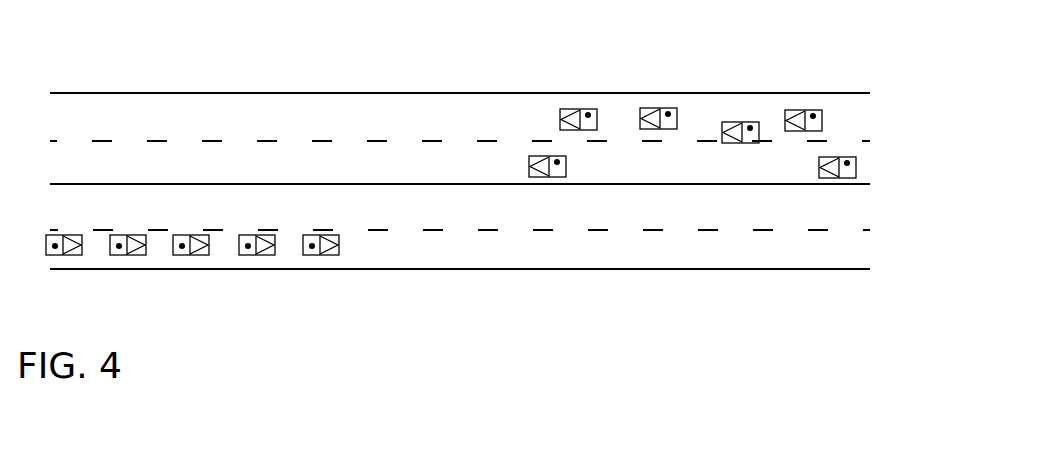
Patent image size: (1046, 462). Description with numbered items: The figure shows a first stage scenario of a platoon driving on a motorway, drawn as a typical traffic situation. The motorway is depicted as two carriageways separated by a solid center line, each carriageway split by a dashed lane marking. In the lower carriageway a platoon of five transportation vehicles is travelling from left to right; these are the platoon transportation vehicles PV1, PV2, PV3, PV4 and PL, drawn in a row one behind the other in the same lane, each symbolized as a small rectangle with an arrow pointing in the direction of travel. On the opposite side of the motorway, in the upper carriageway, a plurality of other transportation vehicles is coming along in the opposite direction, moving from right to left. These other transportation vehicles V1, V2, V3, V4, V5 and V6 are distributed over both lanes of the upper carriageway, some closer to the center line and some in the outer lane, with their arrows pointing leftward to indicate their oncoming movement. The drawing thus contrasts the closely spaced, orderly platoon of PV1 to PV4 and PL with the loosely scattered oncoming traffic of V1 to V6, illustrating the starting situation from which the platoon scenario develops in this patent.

The other transportation vehicle V1 is at (553, 162).
The other transportation vehicle V2 is at (589, 113).
The other transportation vehicle V3 is at (667, 113).
The other transportation vehicle V4 is at (750, 127).
The other transportation vehicle V5 is at (813, 115).
The other transportation vehicle V6 is at (848, 162).
The platoon transportation vehicle PV1 is at (55, 248).
The platoon transportation vehicle PV2 is at (126, 248).
The platoon transportation vehicle PV3 is at (187, 248).
The platoon transportation vehicle PV4 is at (253, 248).
The platoon transportation vehicle PL is at (318, 248).